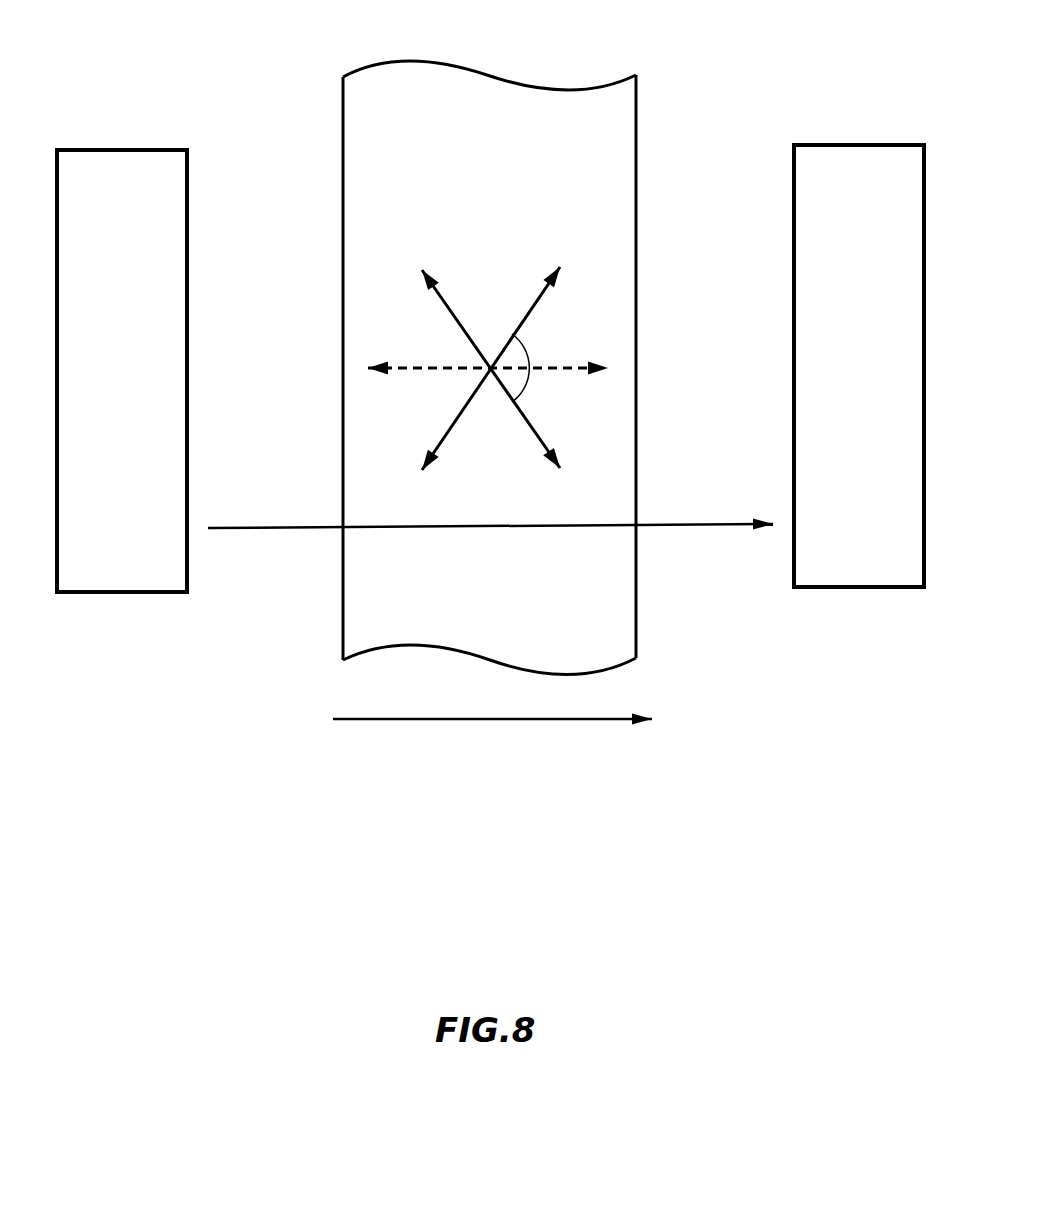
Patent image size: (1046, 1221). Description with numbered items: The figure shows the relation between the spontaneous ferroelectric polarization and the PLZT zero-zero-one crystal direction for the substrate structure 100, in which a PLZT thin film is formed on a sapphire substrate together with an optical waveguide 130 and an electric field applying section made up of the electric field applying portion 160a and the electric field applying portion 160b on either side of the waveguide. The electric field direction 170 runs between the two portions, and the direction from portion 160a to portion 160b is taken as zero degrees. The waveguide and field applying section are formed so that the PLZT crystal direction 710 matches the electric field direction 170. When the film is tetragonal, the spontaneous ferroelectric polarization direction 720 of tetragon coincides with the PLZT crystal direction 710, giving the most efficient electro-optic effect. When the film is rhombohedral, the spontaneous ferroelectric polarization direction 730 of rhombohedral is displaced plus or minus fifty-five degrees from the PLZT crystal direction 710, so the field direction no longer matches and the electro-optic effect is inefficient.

The substrate structure 100 is at (517, 914).
The optical waveguide 130 is at (488, 75).
The electric field applying portion 160a is at (124, 150).
The electric field applying portion 160b is at (858, 145).
The electric field direction 170 is at (668, 527).
The PLZT [001] direction 710 is at (553, 720).
The spontaneous ferroelectric polarization direction of tetragon 720 is at (603, 360).
The spontaneous ferroelectric polarization direction of rhombohedral 730 is at (418, 265).